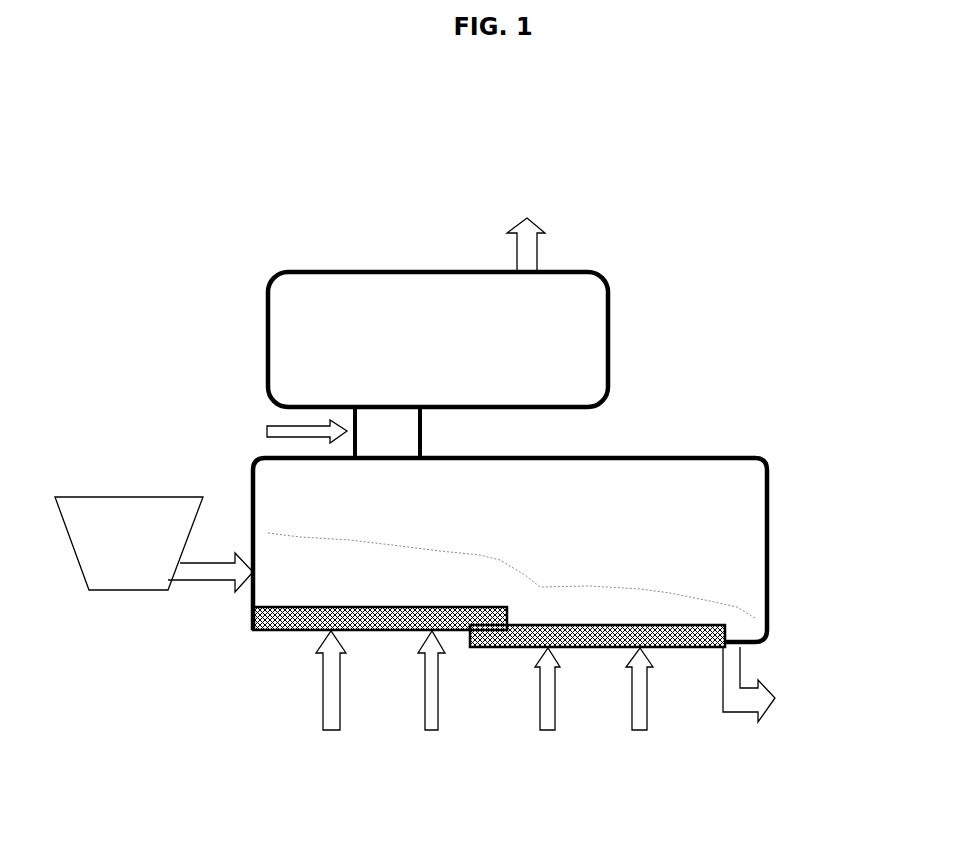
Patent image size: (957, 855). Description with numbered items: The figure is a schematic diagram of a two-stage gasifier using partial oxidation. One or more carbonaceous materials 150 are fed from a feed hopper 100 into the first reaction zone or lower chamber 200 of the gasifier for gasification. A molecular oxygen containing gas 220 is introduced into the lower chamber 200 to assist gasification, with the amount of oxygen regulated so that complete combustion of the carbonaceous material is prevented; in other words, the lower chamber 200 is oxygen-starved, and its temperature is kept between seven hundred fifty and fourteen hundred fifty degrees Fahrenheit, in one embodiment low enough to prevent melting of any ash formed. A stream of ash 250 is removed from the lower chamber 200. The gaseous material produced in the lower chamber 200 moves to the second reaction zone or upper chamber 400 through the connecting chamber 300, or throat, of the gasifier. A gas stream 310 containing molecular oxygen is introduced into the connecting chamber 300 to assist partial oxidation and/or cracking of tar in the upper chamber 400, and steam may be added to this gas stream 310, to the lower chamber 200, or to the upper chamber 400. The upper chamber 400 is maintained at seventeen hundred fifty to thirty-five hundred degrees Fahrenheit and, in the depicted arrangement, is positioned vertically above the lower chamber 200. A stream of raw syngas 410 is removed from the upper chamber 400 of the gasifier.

The feed hopper 100 is at (152, 554).
The carbonaceous materials 150 is at (210, 591).
The lower chamber 200 is at (536, 534).
The molecular oxygen containing gas 220 is at (318, 738).
The stream of ash 250 is at (777, 685).
The connecting chamber 300 is at (411, 441).
The gas stream 310 is at (279, 432).
The upper chamber 400 is at (416, 348).
The stream of raw syngas 410 is at (527, 231).